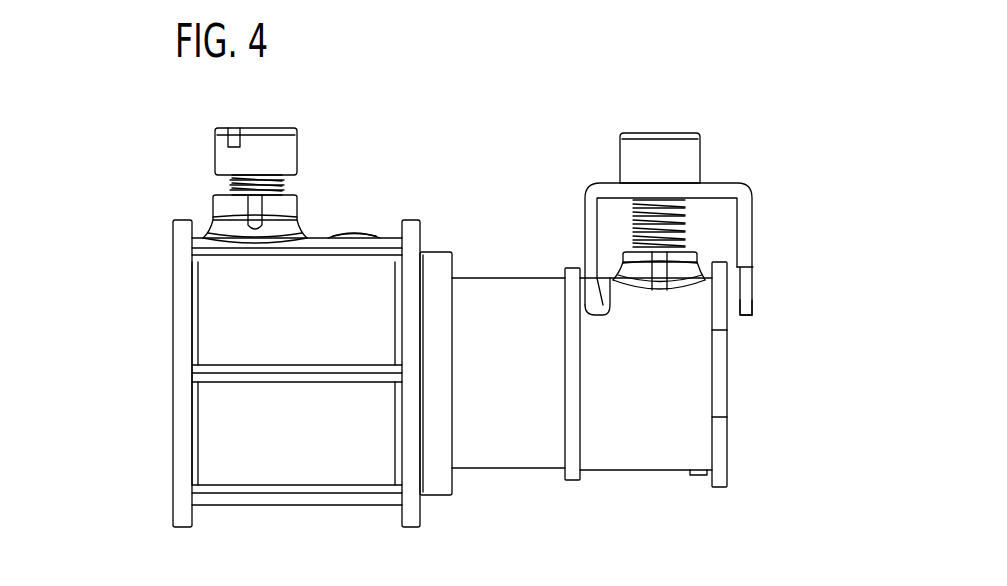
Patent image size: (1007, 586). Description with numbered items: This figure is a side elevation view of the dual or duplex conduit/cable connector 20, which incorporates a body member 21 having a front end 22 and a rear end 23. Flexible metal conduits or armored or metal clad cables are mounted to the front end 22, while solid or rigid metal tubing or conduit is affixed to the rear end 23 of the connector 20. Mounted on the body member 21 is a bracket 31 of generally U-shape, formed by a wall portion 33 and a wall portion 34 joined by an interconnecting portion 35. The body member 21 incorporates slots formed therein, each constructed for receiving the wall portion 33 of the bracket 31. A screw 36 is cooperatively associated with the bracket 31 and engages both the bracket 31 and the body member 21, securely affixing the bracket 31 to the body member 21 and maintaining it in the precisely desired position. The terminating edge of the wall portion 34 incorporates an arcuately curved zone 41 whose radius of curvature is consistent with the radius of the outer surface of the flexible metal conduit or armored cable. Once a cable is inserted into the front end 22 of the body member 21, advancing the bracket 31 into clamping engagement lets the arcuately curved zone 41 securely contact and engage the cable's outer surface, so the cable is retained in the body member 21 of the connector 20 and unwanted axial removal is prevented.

The duplex conduit/cable connector 20 is at (152, 215).
The body member 21 is at (468, 282).
The front end 22 is at (729, 455).
The rear end 23 is at (185, 472).
The bracket 31 is at (731, 180).
The wall portion 33 is at (588, 238).
The wall portion 34 is at (750, 229).
The interconnecting portion 35 is at (610, 186).
The screw 36 is at (672, 146).
The arcuately curved zone 41 is at (751, 316).